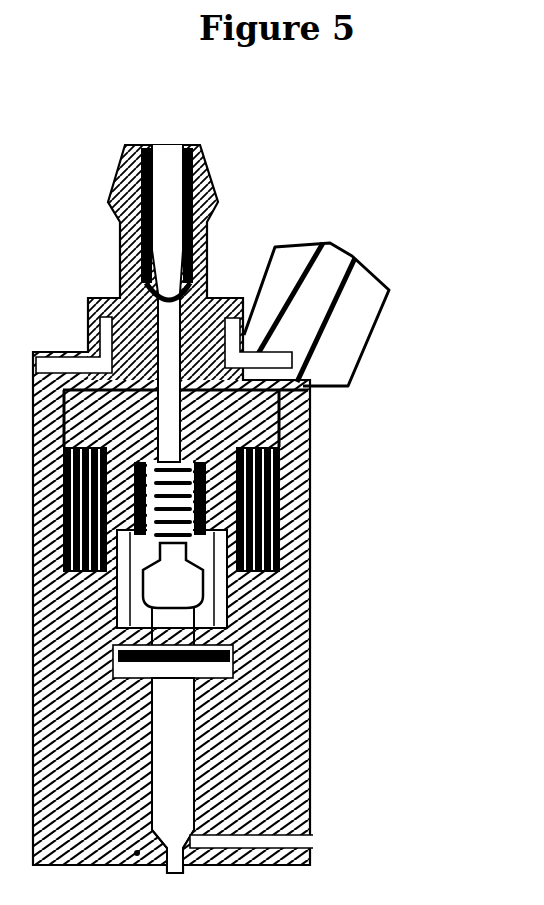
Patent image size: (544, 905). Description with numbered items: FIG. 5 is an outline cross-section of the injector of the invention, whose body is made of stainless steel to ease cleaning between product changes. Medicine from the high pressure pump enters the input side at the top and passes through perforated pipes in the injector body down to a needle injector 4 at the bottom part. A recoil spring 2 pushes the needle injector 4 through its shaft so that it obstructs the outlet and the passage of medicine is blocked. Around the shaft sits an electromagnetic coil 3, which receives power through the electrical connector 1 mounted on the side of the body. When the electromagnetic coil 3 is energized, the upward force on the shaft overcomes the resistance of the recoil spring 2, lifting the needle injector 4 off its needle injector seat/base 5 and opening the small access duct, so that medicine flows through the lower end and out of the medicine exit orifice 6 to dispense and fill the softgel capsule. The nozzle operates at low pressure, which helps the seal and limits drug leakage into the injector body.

The electrical connector 1 is at (363, 307).
The recoil spring 2 is at (168, 454).
The electromagnetic coil 3 is at (235, 571).
The needle injector 4 is at (178, 742).
The needle injector seat/base 5 is at (198, 833).
The medicine exit orifice 6 is at (303, 838).